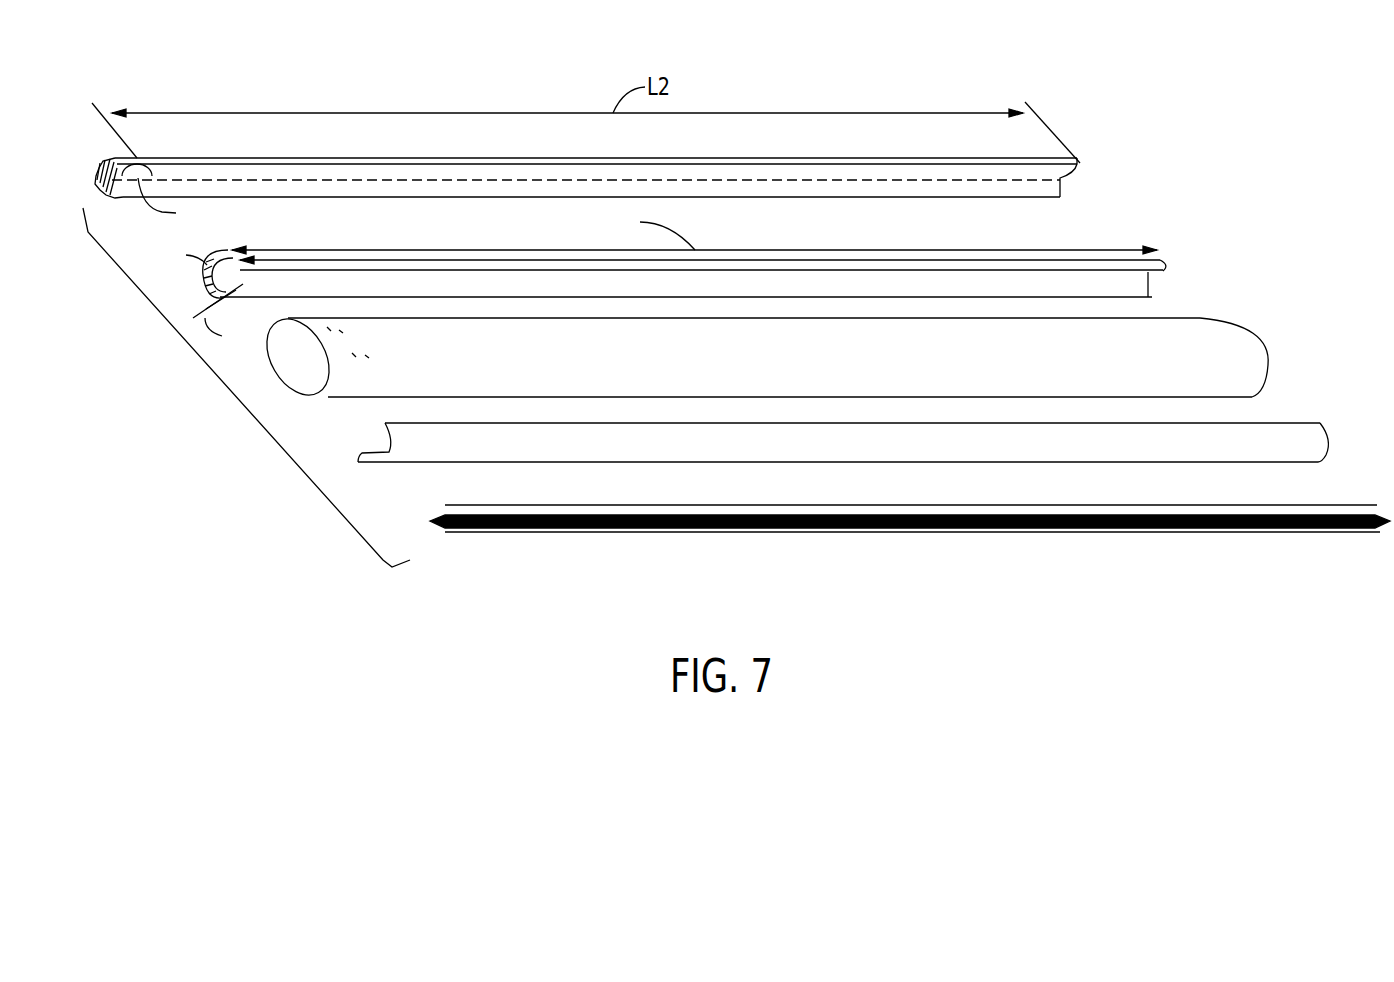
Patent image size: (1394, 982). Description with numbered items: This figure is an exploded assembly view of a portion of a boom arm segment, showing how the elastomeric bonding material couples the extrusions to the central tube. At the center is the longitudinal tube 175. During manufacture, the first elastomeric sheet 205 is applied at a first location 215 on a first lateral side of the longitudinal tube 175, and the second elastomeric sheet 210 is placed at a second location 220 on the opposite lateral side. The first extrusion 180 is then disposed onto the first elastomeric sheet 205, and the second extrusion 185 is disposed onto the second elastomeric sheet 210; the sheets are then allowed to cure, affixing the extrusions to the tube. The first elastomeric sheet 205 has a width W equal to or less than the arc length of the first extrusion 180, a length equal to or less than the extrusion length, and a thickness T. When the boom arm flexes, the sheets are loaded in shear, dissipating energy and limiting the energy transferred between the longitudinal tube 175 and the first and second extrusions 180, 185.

The first extrusion 180 is at (121, 186).
The first elastomeric sheet 205 is at (1165, 270).
The first location 215 is at (1200, 317).
The longitudinal tube 175 is at (1250, 383).
The second location 220 is at (395, 382).
The second elastomeric sheet 210 is at (1250, 450).
The second extrusion 185 is at (1177, 510).